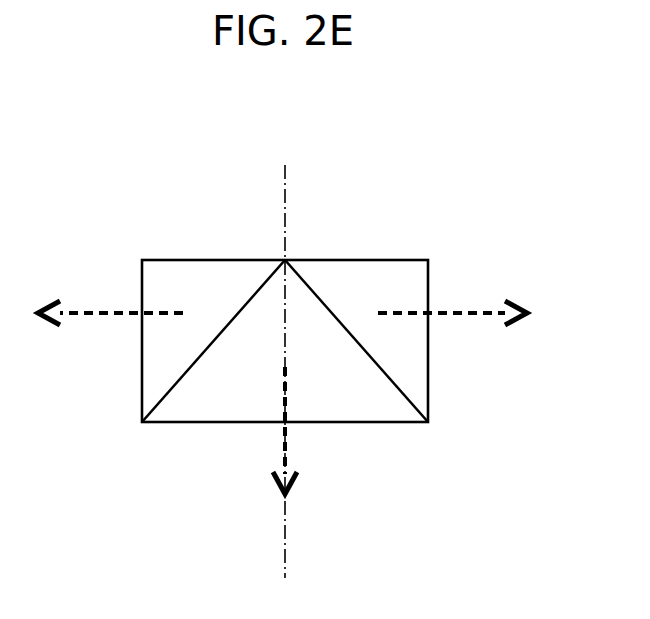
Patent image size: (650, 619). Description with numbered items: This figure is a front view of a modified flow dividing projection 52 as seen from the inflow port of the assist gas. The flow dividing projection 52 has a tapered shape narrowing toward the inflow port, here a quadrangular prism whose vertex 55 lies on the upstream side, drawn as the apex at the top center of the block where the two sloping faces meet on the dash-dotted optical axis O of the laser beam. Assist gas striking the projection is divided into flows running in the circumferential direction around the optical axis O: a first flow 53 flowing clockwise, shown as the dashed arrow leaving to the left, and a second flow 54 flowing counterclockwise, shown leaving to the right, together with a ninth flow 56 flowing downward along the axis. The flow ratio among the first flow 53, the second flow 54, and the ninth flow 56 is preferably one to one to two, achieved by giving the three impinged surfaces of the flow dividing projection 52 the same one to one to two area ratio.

The optical axis O is at (286, 183).
The flow dividing projection 52 is at (388, 260).
The first flow 53 is at (103, 312).
The second flow 54 is at (457, 312).
The vertex 55 is at (284, 260).
The ninth flow 56 is at (287, 446).